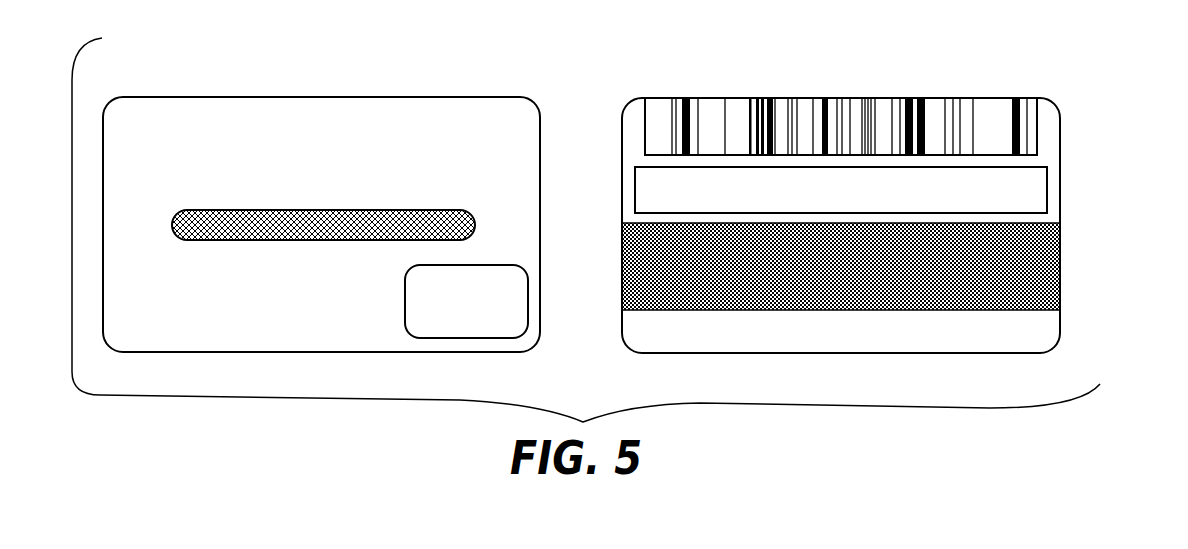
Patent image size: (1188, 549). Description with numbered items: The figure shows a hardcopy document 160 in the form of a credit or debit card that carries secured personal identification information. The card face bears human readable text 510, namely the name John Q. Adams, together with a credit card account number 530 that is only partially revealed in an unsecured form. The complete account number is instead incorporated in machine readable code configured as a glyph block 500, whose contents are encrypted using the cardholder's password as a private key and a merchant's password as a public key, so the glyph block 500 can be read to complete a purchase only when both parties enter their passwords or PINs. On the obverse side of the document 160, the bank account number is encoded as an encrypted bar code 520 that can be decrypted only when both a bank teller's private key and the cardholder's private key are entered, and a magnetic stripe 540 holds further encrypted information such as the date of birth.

The hardcopy document 160 is at (372, 97).
The glyph block 500 is at (470, 215).
The human readable text 510 is at (244, 330).
The bar code 520 is at (1037, 133).
The credit card account number 530 is at (353, 168).
The magnetic stripe 540 is at (1062, 262).